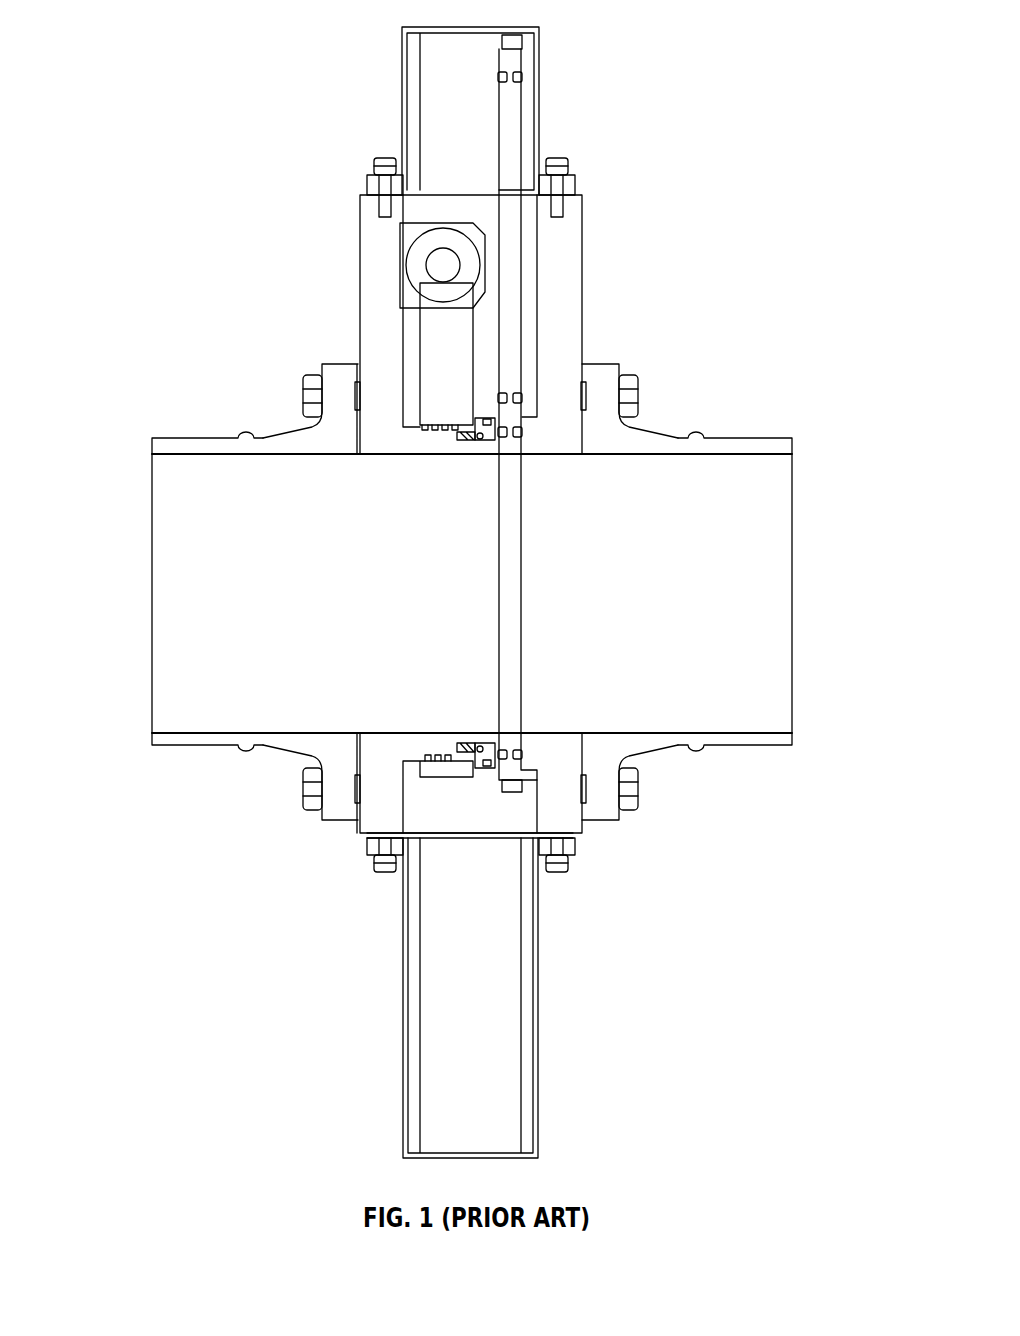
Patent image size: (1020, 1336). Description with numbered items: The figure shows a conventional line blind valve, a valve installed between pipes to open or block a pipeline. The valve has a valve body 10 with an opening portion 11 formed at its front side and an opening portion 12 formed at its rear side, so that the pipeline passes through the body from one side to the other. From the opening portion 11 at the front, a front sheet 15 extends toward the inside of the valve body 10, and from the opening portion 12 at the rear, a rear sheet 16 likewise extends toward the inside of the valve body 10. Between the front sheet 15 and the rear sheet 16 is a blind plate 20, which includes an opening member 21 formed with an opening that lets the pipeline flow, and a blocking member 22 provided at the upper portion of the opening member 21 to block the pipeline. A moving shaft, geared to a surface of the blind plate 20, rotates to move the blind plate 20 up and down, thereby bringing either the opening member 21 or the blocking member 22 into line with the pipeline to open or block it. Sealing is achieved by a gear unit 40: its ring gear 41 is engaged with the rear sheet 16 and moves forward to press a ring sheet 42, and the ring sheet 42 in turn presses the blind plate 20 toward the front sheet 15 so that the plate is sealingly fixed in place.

The valve body 10 is at (343, 212).
The opening portion 11 is at (168, 595).
The opening portion 12 is at (787, 590).
The front sheet 15 is at (557, 755).
The rear sheet 16 is at (382, 750).
The blind plate 20 is at (658, 413).
The opening member 21 is at (532, 525).
The blocking member 22 is at (527, 236).
The gear unit 40 is at (341, 495).
The ring gear 41 is at (427, 397).
The ring sheet 42 is at (468, 428).